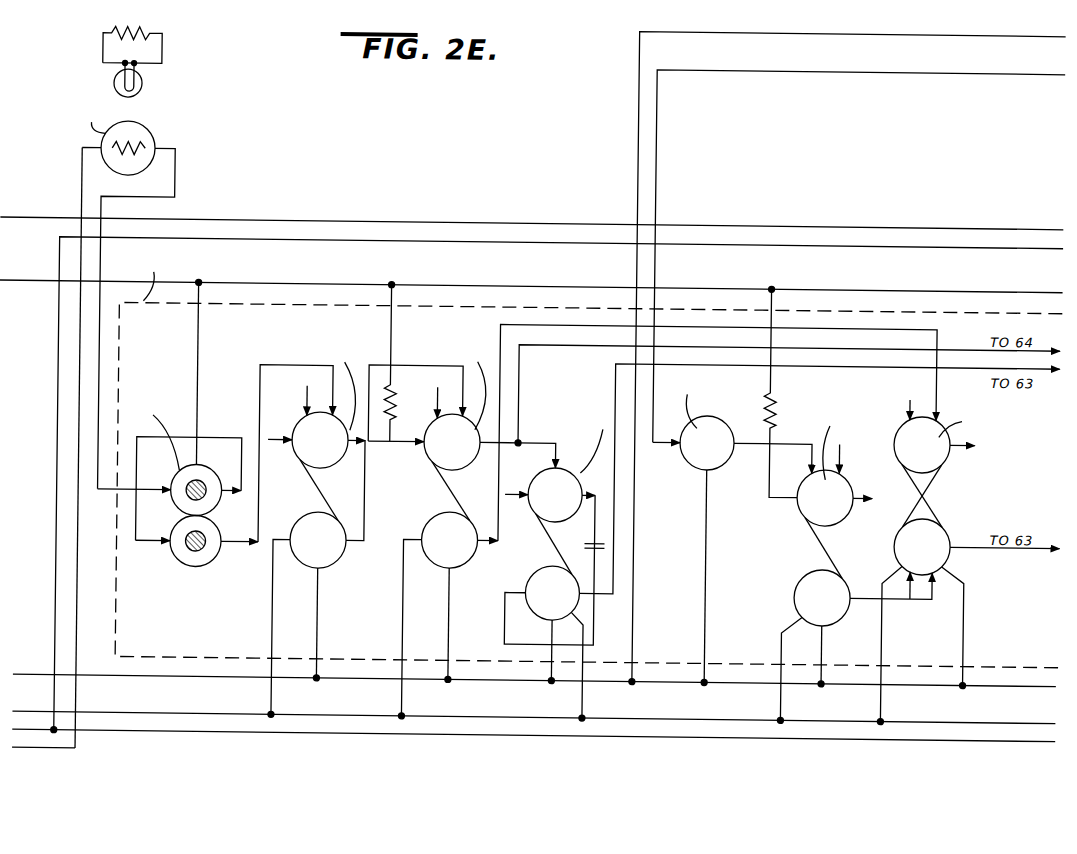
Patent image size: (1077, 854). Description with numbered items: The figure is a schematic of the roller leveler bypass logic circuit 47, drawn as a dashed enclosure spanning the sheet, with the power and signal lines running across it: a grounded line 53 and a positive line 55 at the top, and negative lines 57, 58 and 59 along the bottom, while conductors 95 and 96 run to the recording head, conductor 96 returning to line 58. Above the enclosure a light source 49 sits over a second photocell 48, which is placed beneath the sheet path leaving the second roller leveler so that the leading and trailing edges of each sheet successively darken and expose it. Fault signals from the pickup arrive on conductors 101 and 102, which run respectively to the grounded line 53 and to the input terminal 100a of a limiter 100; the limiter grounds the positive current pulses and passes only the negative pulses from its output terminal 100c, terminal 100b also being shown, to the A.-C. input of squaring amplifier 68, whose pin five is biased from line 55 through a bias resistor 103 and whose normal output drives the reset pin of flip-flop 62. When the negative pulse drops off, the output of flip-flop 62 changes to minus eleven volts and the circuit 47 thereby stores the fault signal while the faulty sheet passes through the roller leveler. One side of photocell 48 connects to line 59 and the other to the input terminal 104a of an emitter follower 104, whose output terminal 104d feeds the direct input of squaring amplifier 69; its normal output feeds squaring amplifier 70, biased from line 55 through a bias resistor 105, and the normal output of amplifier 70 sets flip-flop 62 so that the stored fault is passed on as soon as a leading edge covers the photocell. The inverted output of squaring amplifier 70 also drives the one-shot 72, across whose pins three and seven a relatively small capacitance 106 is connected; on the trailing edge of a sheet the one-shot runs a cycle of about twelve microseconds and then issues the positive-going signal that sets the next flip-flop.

The roller leveler bypass logic circuit 47 is at (236, 332).
The second photocell 48 is at (147, 134).
The light source 49 is at (143, 82).
The grounded line 53 is at (1003, 675).
The line 55 is at (1048, 290).
The line 57 is at (942, 712).
The line 58 is at (939, 730).
The line 59 is at (32, 748).
The reset flip-flop 62 is at (936, 491).
The squaring amplifier 68 is at (801, 588).
The squaring amplifier 69 is at (341, 551).
The squaring amplifier 70 is at (452, 487).
The one-shot multivibrator 72 is at (579, 460).
The conductor 95 is at (1047, 228).
The conductor 96 is at (1047, 242).
The limiter 100 is at (705, 449).
The input terminal 100a is at (659, 459).
The limiter terminal 100b is at (728, 480).
The output terminal 100c is at (737, 419).
The conductor 101 is at (1058, 30).
The conductor 102 is at (1058, 68).
The bias resistor 103 is at (781, 391).
The emitter follower 104 is at (218, 511).
The input terminal 104a is at (178, 498).
The output terminal 104d is at (223, 546).
The bias resistor 105 is at (398, 395).
The capacitance 106 is at (593, 541).